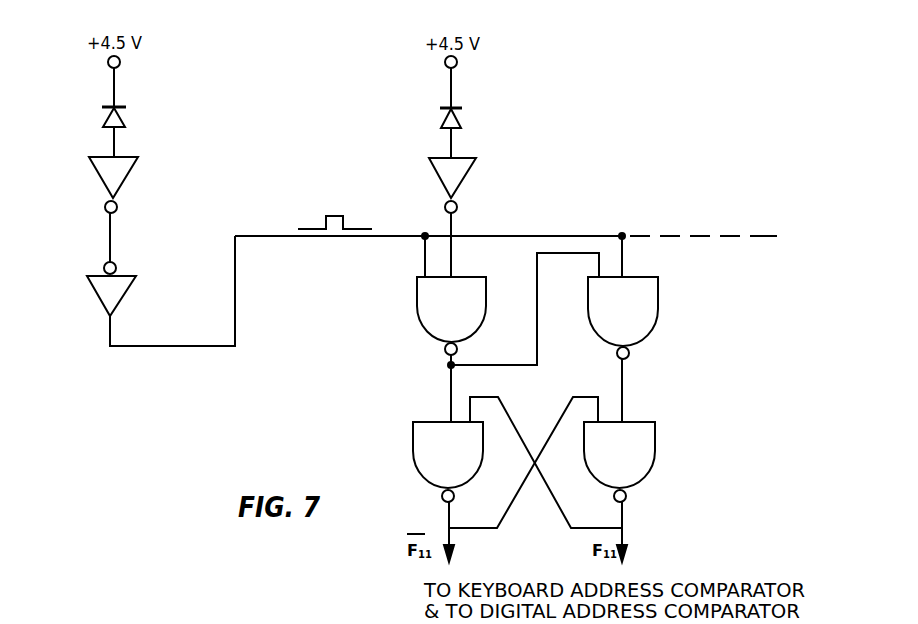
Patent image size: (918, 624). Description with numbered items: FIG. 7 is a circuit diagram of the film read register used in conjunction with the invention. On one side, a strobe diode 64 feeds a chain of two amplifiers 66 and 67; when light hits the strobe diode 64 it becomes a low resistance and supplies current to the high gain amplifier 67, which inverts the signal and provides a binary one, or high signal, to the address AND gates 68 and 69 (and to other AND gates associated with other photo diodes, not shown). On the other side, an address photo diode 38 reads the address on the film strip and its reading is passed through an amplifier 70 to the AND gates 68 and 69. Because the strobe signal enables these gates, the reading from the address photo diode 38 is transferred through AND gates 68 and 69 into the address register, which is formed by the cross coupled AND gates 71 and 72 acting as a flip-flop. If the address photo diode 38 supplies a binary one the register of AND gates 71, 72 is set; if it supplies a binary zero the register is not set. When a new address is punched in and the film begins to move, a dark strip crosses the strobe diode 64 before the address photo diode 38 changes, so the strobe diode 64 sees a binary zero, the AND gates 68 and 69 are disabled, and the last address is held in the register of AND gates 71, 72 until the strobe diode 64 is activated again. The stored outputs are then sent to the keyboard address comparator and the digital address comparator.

The address photo diode 38 is at (441, 113).
The strobe diode 64 is at (103, 116).
The amplifier 66 is at (93, 171).
The high gain amplifier 67 is at (96, 290).
The AND gate 68 is at (421, 318).
The AND gate 69 is at (656, 316).
The amplifier 70 is at (473, 171).
The AND gate 71 is at (413, 444).
The AND gate 72 is at (656, 446).